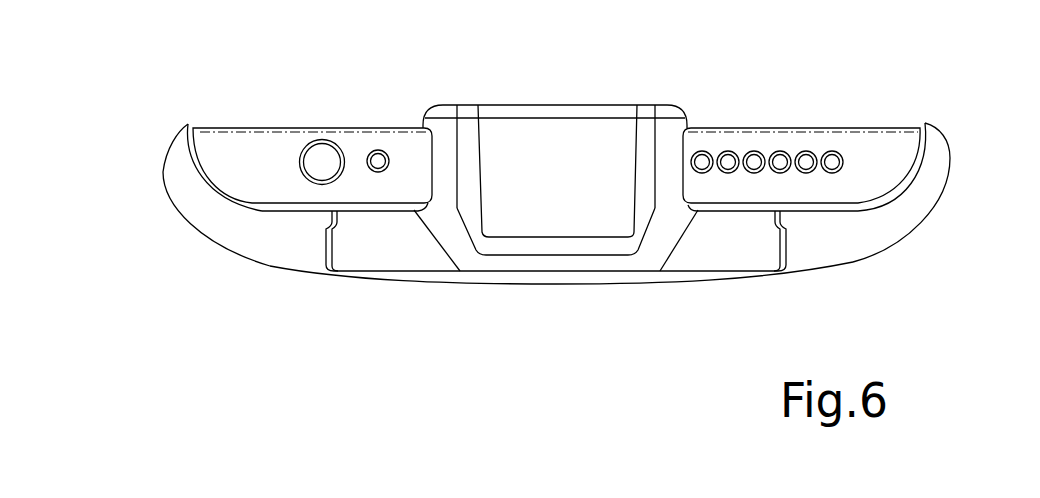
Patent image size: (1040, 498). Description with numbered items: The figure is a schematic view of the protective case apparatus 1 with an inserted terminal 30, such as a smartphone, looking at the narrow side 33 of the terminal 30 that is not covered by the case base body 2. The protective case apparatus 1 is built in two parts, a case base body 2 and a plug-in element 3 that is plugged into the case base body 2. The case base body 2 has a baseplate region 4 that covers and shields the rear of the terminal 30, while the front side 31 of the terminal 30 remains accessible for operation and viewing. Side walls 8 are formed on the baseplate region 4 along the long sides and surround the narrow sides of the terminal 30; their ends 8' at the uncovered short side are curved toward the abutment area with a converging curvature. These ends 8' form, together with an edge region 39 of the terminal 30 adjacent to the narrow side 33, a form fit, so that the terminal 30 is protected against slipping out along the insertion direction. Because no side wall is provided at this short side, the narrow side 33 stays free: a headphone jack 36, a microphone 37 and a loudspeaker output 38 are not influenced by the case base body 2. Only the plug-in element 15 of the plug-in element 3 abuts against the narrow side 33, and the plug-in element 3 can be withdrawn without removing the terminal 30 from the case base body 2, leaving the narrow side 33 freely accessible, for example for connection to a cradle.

The protective case apparatus 1 is at (915, 273).
The case base body 2 is at (930, 215).
The plug-in element 3 is at (555, 128).
The baseplate region 4 is at (260, 260).
The side walls 8 is at (558, 203).
The ends of the side walls 8' is at (560, 121).
The plug-in element 15 is at (620, 103).
The terminal 30 is at (298, 127).
The front side 31 is at (370, 127).
The narrow side 33 is at (248, 182).
The headphone jack 36 is at (322, 168).
The microphone 37 is at (378, 165).
The loudspeaker output 38 is at (741, 192).
The edge region 39 is at (202, 153).